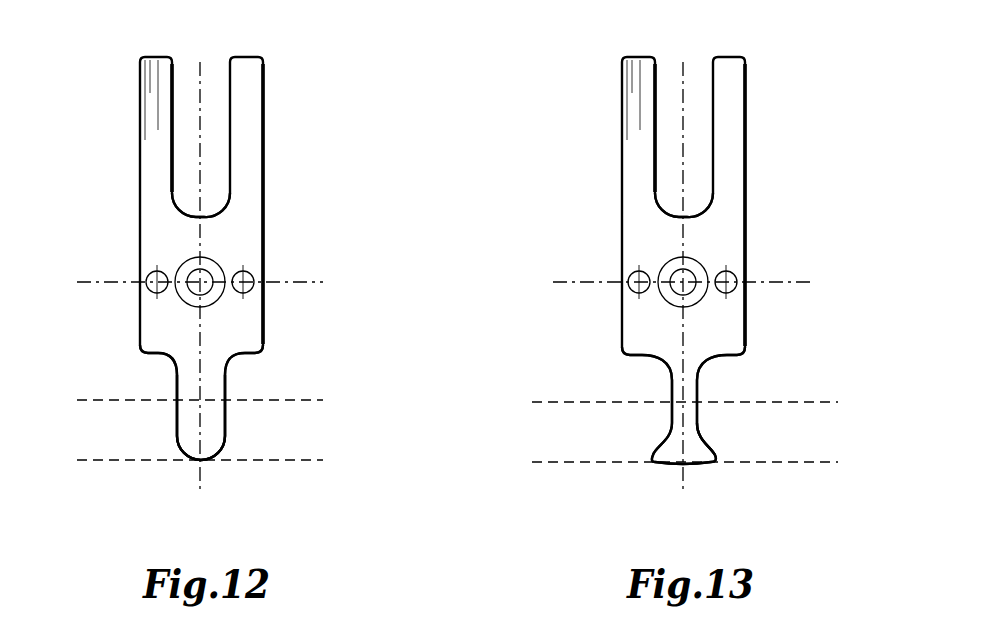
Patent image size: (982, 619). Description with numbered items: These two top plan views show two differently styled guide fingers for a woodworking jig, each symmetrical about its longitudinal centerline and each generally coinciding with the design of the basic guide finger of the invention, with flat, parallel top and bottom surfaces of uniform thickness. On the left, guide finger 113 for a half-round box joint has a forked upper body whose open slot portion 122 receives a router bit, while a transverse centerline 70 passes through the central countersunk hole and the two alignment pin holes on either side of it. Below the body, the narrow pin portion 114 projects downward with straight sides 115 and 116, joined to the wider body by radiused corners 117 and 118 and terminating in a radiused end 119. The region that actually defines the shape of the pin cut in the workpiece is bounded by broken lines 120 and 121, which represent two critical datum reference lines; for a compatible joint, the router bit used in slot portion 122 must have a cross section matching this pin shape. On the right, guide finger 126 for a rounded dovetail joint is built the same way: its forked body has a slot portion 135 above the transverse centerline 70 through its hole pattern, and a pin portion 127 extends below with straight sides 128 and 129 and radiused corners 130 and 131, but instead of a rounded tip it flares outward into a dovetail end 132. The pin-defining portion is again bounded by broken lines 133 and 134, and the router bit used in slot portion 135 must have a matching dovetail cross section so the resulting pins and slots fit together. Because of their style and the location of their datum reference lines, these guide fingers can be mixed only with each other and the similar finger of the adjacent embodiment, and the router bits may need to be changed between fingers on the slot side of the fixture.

In FIG. 12, the transverse centerline 70 is at (290, 282).
In FIG. 13, the transverse centerline 70 is at (770, 282).
In FIG. 12, the guide finger 113 is at (296, 118).
In FIG. 12, the pin portion 114 is at (207, 380).
In FIG. 12, the straight side 115 is at (175, 405).
In FIG. 12, the straight side 116 is at (230, 392).
In FIG. 12, the radiused corner 117 is at (160, 362).
In FIG. 12, the radiused corner 118 is at (242, 368).
In FIG. 12, the radiused end 119 is at (210, 445).
In FIG. 12, the broken line 120 is at (118, 403).
In FIG. 12, the broken line 121 is at (117, 462).
In FIG. 12, the slot portion 122 is at (191, 157).
In FIG. 13, the guide finger 126 is at (768, 125).
In FIG. 13, the pin portion 127 is at (698, 420).
In FIG. 13, the straight side 128 is at (660, 395).
In FIG. 13, the straight side 129 is at (698, 388).
In FIG. 13, the radiused corner 130 is at (653, 362).
In FIG. 13, the radiused corner 131 is at (703, 370).
In FIG. 13, the dovetail end 132 is at (693, 452).
In FIG. 13, the broken line 133 is at (578, 403).
In FIG. 13, the broken line 134 is at (557, 463).
In FIG. 13, the slot portion 135 is at (691, 100).